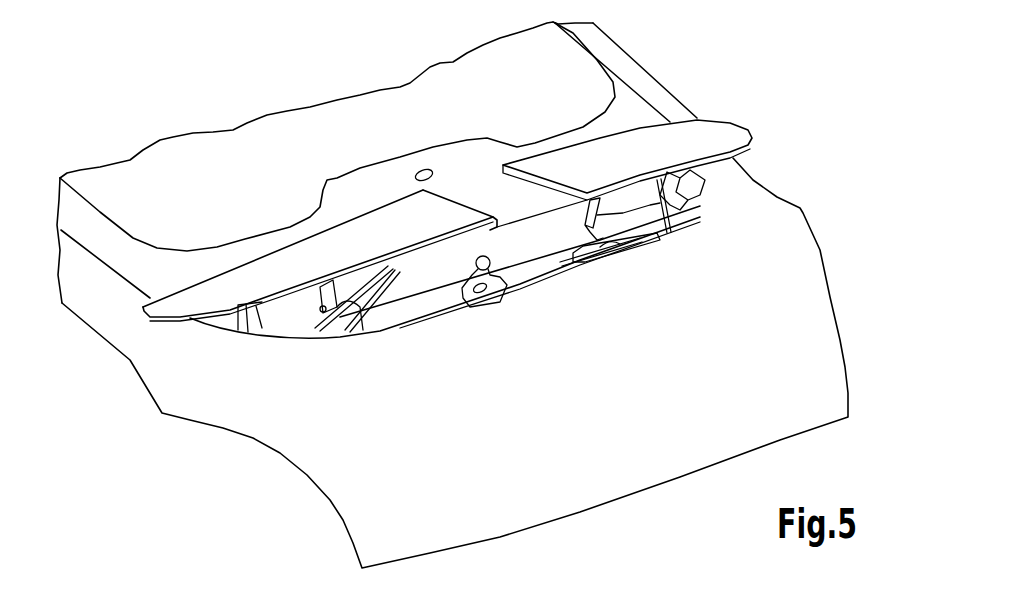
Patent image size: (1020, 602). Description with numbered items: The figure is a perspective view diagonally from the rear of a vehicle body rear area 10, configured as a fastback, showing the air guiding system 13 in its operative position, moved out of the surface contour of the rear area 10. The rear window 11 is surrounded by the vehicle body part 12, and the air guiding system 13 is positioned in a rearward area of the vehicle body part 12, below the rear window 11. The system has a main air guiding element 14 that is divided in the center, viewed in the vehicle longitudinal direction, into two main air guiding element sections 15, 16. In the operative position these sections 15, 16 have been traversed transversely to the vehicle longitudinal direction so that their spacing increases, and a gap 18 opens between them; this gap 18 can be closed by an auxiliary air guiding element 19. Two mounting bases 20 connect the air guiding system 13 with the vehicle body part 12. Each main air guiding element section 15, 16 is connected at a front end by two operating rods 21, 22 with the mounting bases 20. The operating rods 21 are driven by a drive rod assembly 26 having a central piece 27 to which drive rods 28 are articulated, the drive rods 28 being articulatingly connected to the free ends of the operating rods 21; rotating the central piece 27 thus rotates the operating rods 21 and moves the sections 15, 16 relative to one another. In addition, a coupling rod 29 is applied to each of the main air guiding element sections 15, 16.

The vehicle body rear area 10 is at (255, 478).
The rear window 11 is at (346, 150).
The vehicle body part 12 is at (640, 64).
The air guiding system 13 is at (400, 197).
The main air guiding element 14 is at (475, 223).
The main air guiding element section 15 is at (203, 300).
The main air guiding element section 16 is at (707, 133).
The gap 18 is at (478, 183).
The auxiliary air guiding element 19 is at (512, 213).
The mounting base 20 is at (613, 267).
The operating rod 21 is at (245, 330).
The operating rod 22 is at (320, 288).
The drive rod assembly 26 is at (457, 290).
The central piece 27 is at (510, 280).
The drive rod 28 is at (390, 308).
The coupling rod 29 is at (330, 330).